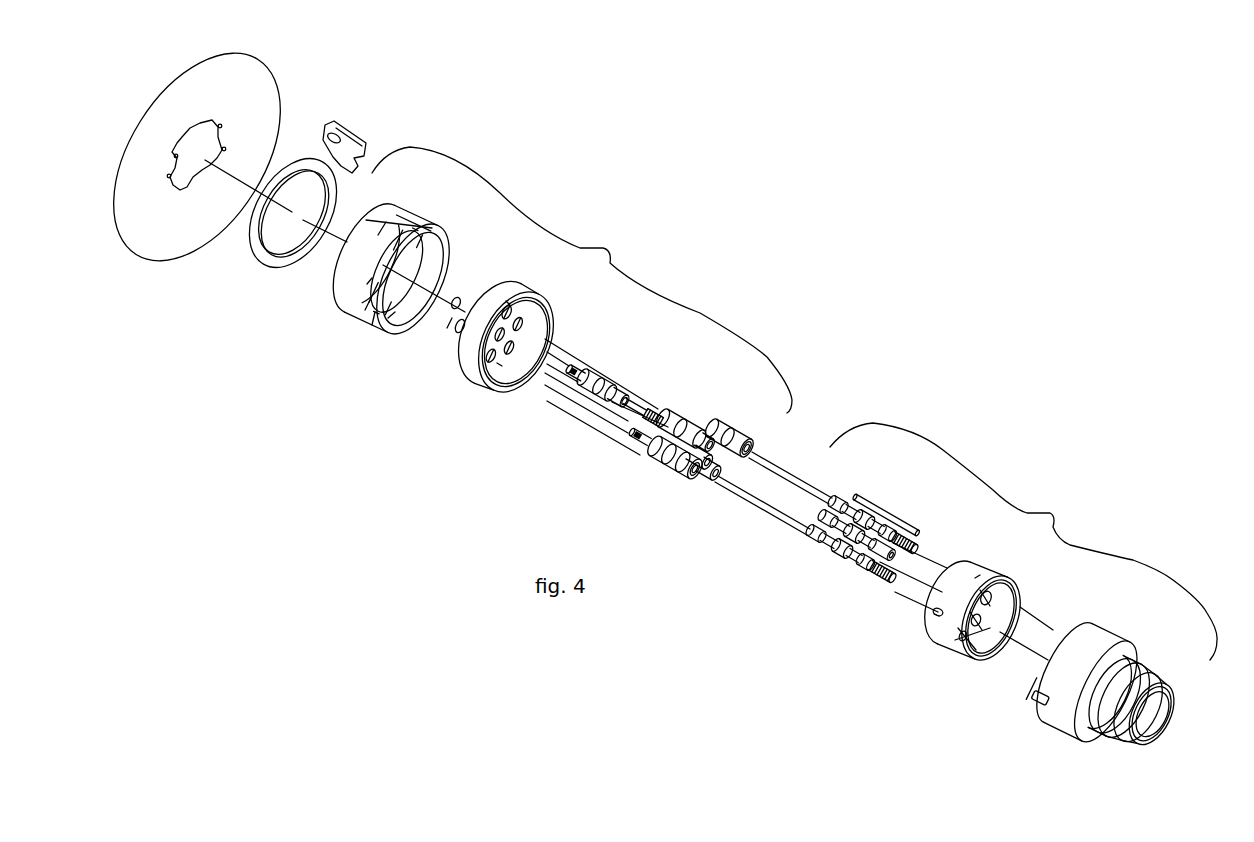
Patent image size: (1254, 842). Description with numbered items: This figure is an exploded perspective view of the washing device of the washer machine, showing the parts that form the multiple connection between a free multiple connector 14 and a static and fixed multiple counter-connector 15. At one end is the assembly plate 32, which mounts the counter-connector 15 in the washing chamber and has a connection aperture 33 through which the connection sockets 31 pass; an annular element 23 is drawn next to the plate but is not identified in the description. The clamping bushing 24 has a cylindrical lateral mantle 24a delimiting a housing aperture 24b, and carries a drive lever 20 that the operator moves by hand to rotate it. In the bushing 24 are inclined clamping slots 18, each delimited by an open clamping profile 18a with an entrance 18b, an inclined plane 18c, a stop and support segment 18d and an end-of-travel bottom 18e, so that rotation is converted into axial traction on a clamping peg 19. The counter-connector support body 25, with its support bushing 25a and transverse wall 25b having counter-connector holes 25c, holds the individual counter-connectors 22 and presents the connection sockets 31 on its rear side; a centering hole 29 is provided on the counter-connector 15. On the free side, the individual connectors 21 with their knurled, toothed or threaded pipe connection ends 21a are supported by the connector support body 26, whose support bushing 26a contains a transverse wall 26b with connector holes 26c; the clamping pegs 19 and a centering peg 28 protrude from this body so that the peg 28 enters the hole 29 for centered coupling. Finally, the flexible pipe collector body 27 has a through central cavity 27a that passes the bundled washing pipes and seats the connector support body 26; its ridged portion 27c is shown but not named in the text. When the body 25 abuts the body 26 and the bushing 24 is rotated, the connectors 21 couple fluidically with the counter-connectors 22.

The free multiple connector 14 is at (1023, 541).
The static and fixed multiple counter-connector 15 is at (582, 280).
The inclined clamping slot 18 is at (441, 262).
The open clamping profile 18a is at (372, 326).
The entrance 18b is at (385, 312).
The inclined plane 18c is at (365, 312).
The stop and support segment 18d is at (367, 285).
The end-of-travel bottom 18e is at (380, 233).
The clamping peg 19 is at (934, 604).
The drive lever 20 is at (345, 134).
The individual connectors 21 is at (851, 507).
The pipe connection ends 21a is at (917, 547).
The individual counter-connectors 22 is at (612, 397).
The sealing ring 23 is at (258, 243).
The clamping bushing 24 is at (393, 257).
The lateral mantle 24a is at (423, 230).
The housing aperture 24b is at (447, 328).
The counter-connector support body 25 is at (537, 329).
The support bushing 25a is at (506, 300).
The transverse wall 25b is at (497, 364).
The counter-connector holes 25c is at (517, 345).
The connector support body 26 is at (983, 614).
The support bushing 26a is at (976, 577).
The transverse wall 26b is at (966, 646).
The connector holes 26c is at (982, 614).
The flexible pipe collector body 27 is at (1132, 716).
The through central cavity 27a is at (1151, 718).
The threaded ridges 27c is at (1128, 713).
The centering peg 28 is at (877, 510).
The centering hole 29 is at (523, 308).
The connection sockets 31 is at (462, 326).
The assembly plate 32 is at (166, 241).
The connection aperture 33 is at (188, 136).